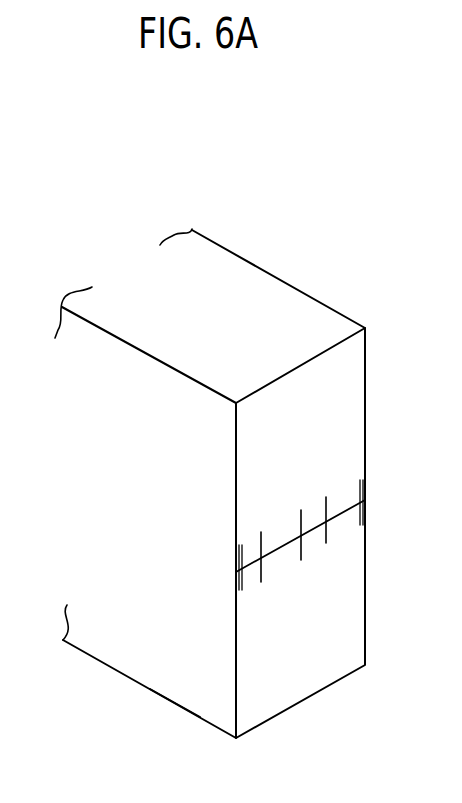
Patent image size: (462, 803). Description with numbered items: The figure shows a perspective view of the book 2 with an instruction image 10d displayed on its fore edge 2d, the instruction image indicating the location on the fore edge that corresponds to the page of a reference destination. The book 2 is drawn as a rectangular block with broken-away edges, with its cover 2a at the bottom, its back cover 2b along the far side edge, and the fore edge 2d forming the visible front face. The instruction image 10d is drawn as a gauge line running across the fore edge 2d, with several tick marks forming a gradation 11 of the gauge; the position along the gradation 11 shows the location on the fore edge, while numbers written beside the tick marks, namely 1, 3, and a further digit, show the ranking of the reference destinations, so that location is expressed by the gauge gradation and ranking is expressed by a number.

The book 2 is at (313, 258).
The cover 2a is at (170, 683).
The back cover 2b is at (367, 582).
The fore edge 2d is at (348, 380).
The instruction image 10d is at (300, 618).
The gradation 11 is at (328, 495).
The graduation 1 is at (260, 569).
The graduation 3 is at (300, 546).